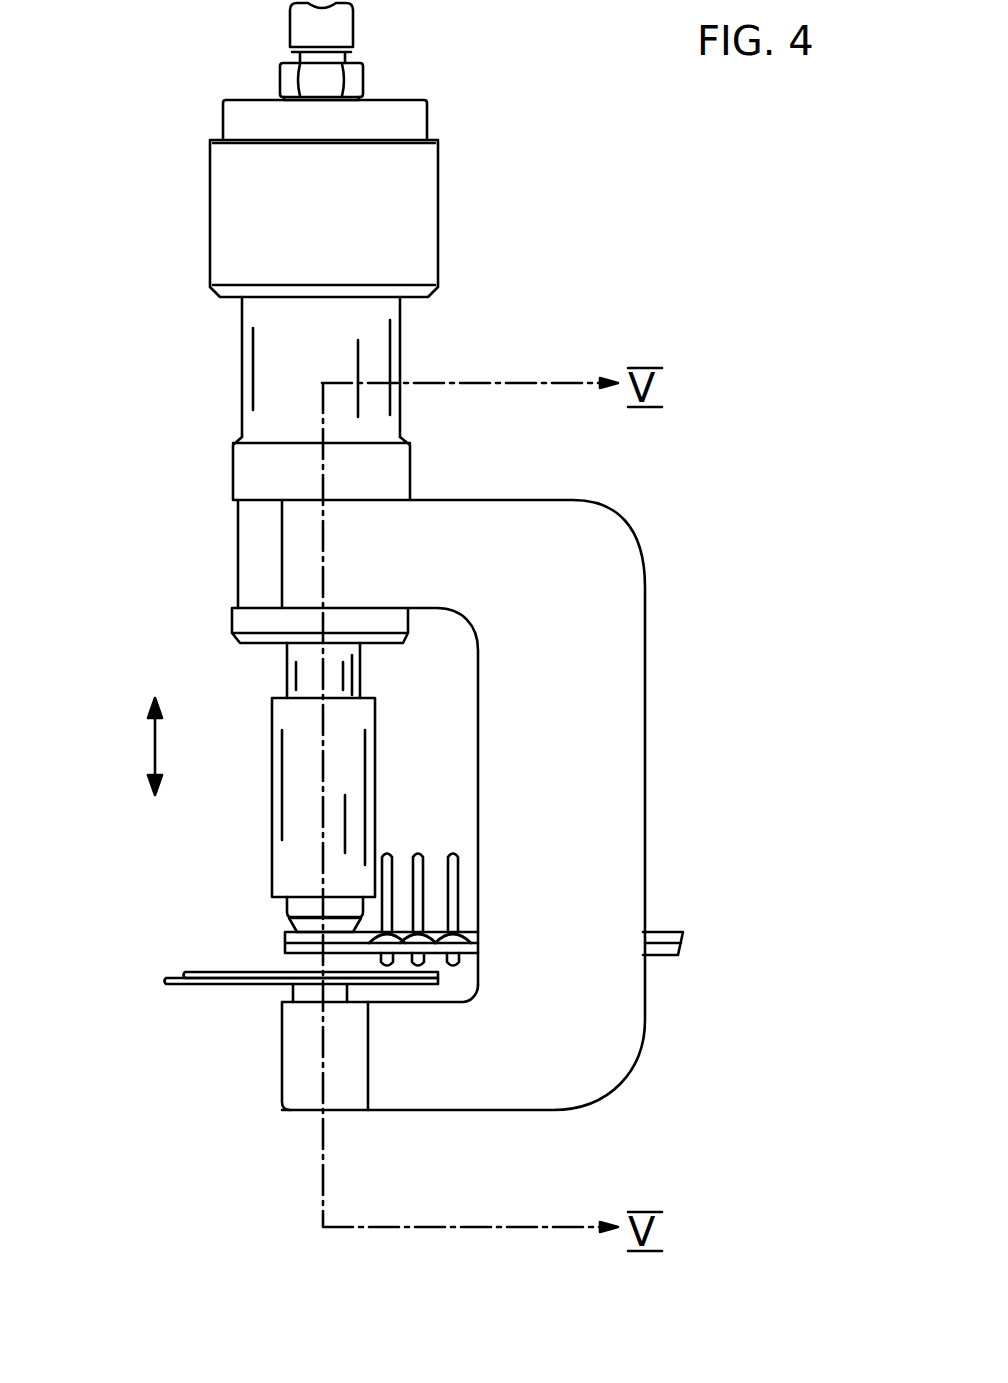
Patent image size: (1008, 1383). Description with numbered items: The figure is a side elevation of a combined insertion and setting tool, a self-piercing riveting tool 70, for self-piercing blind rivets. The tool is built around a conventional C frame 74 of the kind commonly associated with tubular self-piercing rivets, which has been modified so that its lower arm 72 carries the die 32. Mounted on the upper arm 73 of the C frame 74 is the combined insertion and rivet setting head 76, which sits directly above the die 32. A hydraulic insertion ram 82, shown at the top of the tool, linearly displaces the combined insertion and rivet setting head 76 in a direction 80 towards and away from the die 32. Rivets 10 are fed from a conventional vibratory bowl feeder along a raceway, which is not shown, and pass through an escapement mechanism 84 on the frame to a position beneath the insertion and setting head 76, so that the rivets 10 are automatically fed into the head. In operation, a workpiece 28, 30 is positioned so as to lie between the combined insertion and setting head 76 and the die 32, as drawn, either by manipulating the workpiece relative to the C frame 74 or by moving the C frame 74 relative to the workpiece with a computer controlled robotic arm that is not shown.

The self-piercing riveting tool 70 is at (550, 238).
The hydraulic insertion ram 82 is at (373, 338).
The upper arm 73 is at (425, 523).
The C frame 74 is at (610, 520).
The lower arm 72 is at (447, 1090).
The combined insertion and rivet setting head 76 is at (300, 818).
The direction 80 is at (117, 746).
The rivets 10 is at (457, 888).
The workpiece 28 is at (183, 975).
The workpiece 30 is at (197, 985).
The die 32 is at (305, 992).
The escapement mechanism 84 is at (660, 932).